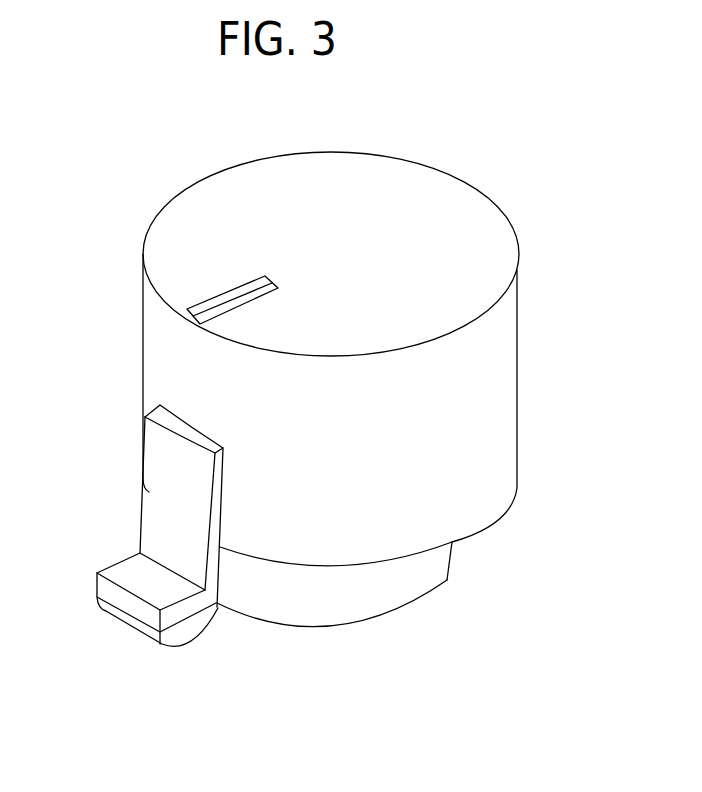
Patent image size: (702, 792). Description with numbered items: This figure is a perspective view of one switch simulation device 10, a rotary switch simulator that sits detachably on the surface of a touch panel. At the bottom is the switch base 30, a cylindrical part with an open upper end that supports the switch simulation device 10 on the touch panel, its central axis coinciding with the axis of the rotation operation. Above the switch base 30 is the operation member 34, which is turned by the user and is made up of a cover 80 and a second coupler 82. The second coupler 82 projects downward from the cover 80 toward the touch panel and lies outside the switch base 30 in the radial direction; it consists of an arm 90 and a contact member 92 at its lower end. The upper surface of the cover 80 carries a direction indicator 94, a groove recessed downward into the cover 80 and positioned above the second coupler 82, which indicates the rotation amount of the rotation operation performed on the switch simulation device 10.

The switch simulation device 10 is at (133, 151).
The switch base 30 is at (435, 600).
The operation member 34 is at (365, 153).
The cover 80 is at (141, 367).
The second coupler 82 is at (110, 551).
The arm 90 is at (140, 512).
The contact member 92 is at (183, 647).
The direction indicator 94 is at (213, 298).